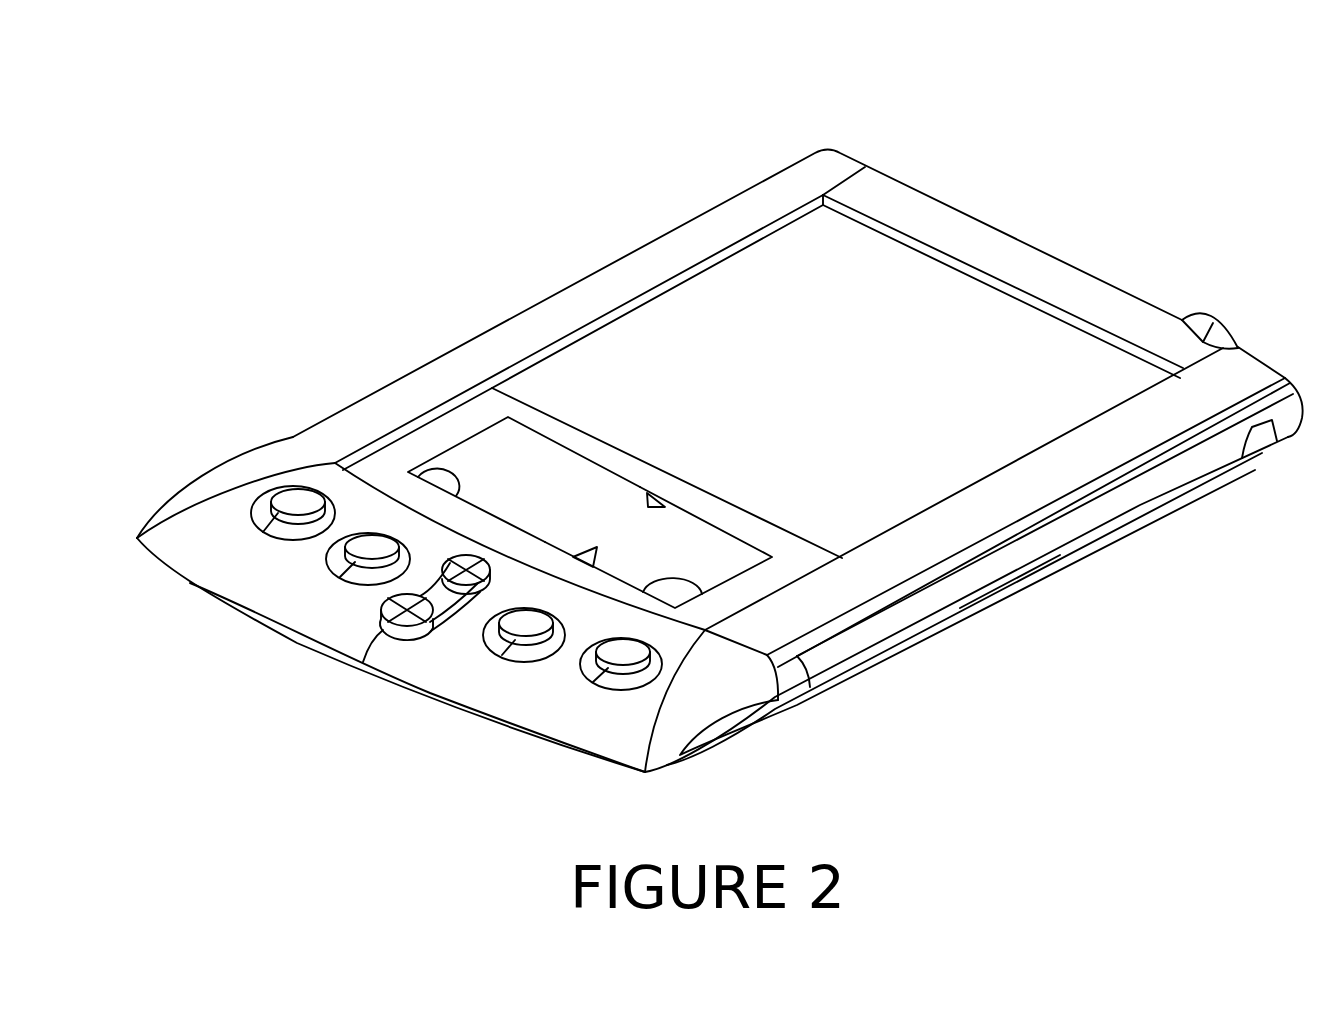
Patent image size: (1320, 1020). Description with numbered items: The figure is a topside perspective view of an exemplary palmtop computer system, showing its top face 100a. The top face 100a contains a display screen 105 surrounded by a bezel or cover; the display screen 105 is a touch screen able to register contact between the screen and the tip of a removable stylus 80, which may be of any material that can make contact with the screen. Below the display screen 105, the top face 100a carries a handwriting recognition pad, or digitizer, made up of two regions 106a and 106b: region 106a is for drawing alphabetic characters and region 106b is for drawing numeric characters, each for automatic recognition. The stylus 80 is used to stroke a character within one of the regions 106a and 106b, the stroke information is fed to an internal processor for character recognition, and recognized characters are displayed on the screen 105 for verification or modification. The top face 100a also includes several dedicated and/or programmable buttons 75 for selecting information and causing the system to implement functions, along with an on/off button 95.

The top face 100a is at (231, 106).
The display screen 105 is at (826, 311).
The region for alphabetic characters 106a is at (548, 497).
The region for numeric characters 106b is at (703, 570).
The buttons 75 is at (298, 495).
The on/off button 95 is at (1207, 320).
The stylus 80 is at (1013, 567).